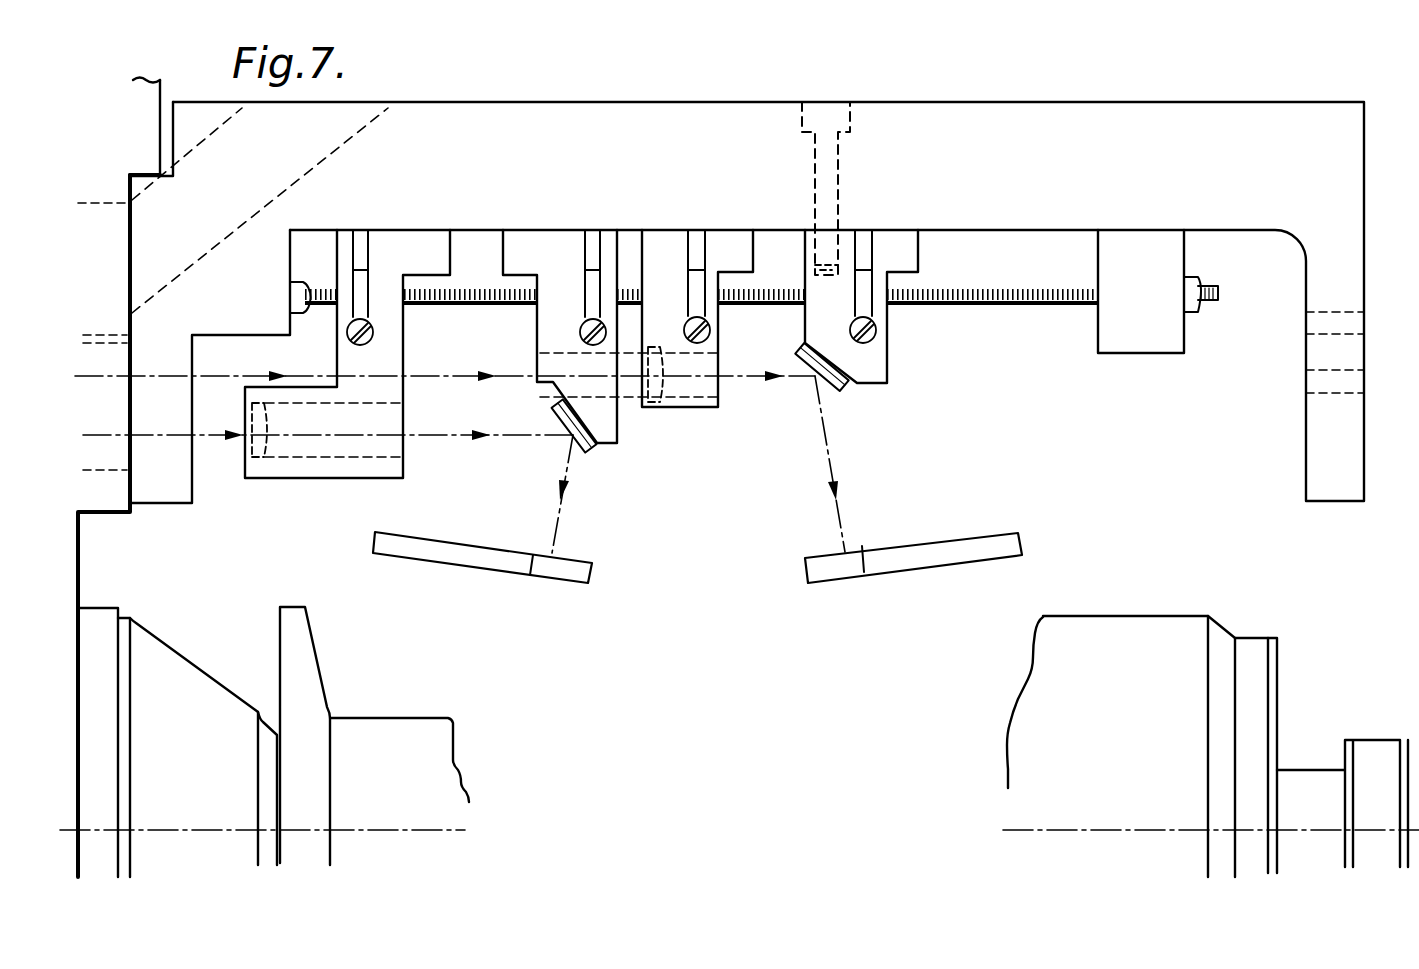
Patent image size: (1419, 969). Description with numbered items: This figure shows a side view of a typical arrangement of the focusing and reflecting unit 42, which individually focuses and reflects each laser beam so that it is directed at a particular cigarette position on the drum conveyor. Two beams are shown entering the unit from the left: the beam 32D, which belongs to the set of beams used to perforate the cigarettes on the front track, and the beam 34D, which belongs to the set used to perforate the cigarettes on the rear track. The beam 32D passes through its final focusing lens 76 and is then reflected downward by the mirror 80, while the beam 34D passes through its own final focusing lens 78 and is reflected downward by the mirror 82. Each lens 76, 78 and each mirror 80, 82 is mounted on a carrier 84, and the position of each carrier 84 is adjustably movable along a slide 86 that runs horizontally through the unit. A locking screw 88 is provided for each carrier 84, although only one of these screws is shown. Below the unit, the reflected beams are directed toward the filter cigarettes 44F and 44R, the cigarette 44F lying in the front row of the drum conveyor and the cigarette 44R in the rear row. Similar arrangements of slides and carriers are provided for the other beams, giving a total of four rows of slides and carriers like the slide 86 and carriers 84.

The focusing and reflecting unit 42 is at (238, 313).
The carrier 84 is at (537, 250).
The slide 86 is at (1000, 288).
The locking screw 88 is at (834, 156).
The final focusing lens 78 is at (248, 455).
The final focusing lens 76 is at (654, 408).
The beam 32D is at (510, 373).
The beam 34D is at (528, 432).
The mirror 82 is at (588, 452).
The mirror 80 is at (840, 388).
The filter cigarette 44R is at (493, 550).
The filter cigarette 44F is at (955, 542).